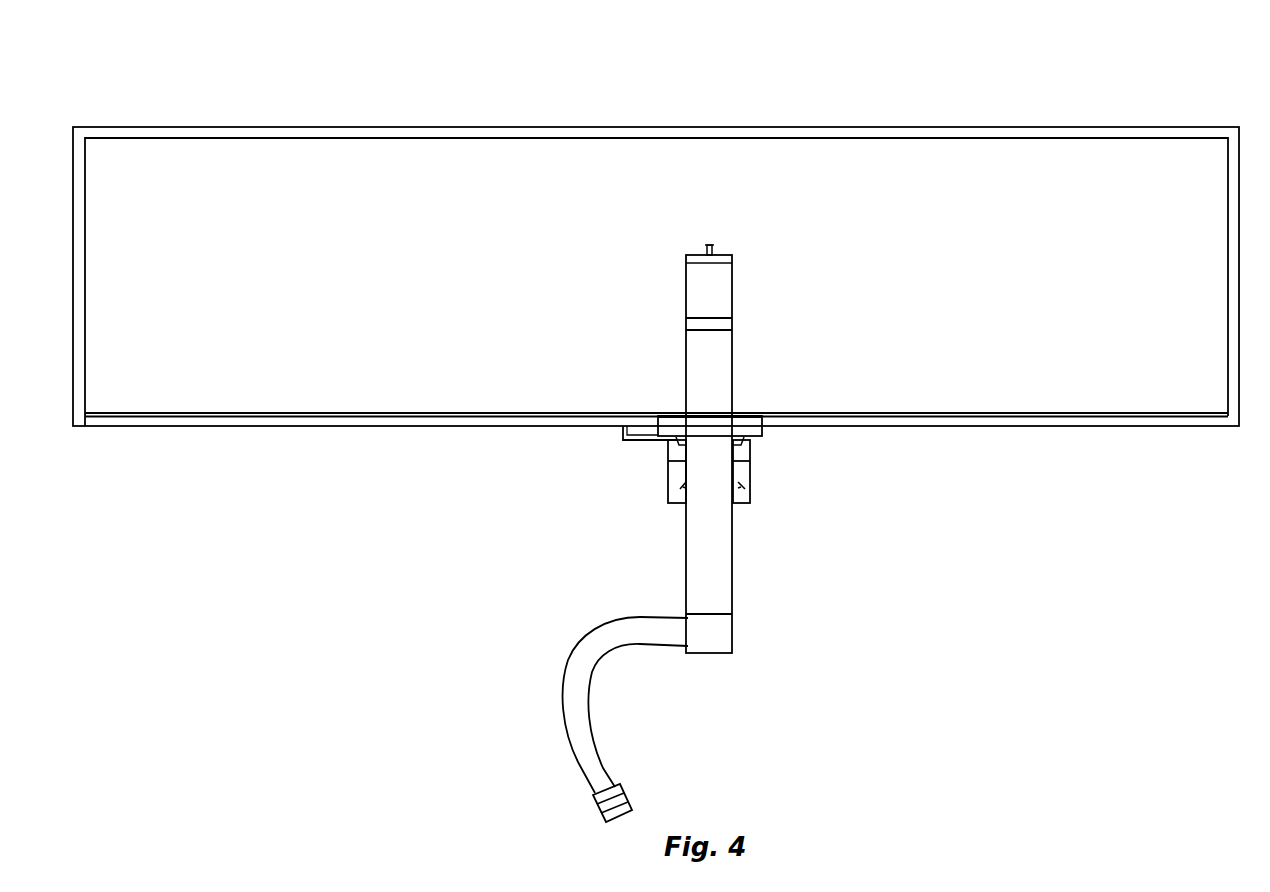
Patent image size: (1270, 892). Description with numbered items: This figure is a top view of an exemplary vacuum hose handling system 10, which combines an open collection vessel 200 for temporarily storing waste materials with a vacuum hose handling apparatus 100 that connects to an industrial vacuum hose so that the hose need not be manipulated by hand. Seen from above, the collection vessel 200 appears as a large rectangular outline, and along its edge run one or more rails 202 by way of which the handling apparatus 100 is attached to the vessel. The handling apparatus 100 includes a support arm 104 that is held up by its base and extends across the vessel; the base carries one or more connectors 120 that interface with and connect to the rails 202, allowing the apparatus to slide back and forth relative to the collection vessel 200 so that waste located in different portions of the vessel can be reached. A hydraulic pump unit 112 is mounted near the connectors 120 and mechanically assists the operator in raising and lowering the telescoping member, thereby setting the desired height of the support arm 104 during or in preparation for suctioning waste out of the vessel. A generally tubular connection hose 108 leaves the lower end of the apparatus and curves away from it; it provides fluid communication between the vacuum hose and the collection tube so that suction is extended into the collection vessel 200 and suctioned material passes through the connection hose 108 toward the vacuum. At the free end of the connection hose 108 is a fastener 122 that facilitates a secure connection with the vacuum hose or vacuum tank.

The vacuum hose handling system 10 is at (1090, 68).
The open collection vessel 200 is at (298, 152).
The rails 202 is at (275, 427).
The vacuum hose handling apparatus 100 is at (756, 609).
The support arm 104 is at (733, 563).
The connectors 120 is at (755, 437).
The hydraulic pump unit 112 is at (642, 442).
The connection hose 108 is at (605, 760).
The fastener 122 is at (622, 800).